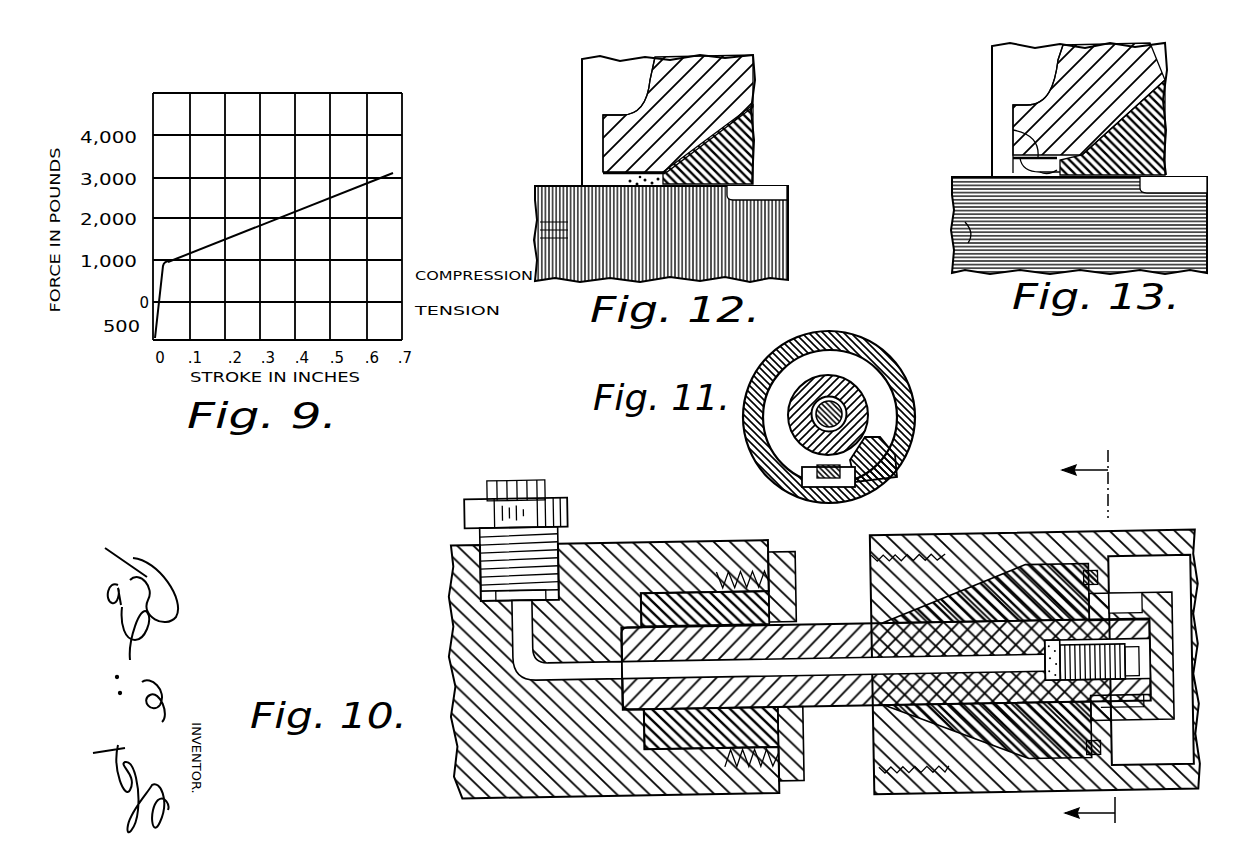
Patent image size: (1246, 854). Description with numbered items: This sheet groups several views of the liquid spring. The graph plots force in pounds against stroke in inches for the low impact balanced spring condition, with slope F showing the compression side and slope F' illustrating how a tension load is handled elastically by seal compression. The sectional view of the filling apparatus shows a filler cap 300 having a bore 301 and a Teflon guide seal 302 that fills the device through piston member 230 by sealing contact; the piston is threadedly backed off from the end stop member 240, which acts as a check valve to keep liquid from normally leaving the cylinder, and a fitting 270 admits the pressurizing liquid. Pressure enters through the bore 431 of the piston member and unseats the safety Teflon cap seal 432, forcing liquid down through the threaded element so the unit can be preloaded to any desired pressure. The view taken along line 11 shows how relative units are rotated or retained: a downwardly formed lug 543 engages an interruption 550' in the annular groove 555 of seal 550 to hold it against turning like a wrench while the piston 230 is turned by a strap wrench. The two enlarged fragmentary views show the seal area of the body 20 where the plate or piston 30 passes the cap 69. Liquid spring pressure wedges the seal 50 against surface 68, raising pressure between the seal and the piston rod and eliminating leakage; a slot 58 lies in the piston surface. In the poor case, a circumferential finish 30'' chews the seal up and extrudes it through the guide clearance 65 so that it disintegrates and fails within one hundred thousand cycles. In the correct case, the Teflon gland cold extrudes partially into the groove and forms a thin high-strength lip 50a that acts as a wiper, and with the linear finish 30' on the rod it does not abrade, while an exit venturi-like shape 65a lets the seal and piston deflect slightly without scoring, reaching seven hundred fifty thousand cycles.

In FIG. 10, the section line 11 is at (1118, 636).
In FIG. 12, the vehicle body / frame portion 20 is at (787, 63).
In FIG. 13, the vehicle body / frame portion 20 is at (1213, 37).
In FIG. 12, the piston 30 is at (677, 212).
In FIG. 13, the piston 30 is at (1092, 202).
In FIG. 13, the linear finish 30' is at (935, 229).
In FIG. 12, the circumferential finish 30'' is at (521, 227).
In FIG. 12, the seal 50 is at (760, 137).
In FIG. 13, the seal 50 is at (1172, 120).
In FIG. 13, the lip 50a is at (1037, 157).
In FIG. 12, the slot in plate 58 is at (787, 195).
In FIG. 13, the slot in plate 58 is at (1200, 188).
In FIG. 12, the guide clearance 65 is at (613, 182).
In FIG. 13, the guide clearance 65 is at (1057, 170).
In FIG. 13, the exit venturi-like shape 65a is at (1013, 130).
In FIG. 12, the surface 68 is at (712, 118).
In FIG. 13, the surface 68 is at (1123, 117).
In FIG. 12, the cap 69 is at (657, 78).
In FIG. 13, the cap 69 is at (1077, 77).
In FIG. 11, the piston member 230 is at (857, 398).
In FIG. 10, the piston member 230 is at (858, 624).
In FIG. 11, the end stop member 240 is at (825, 415).
In FIG. 10, the end stop member 240 is at (1147, 657).
In FIG. 10, the hydraulic fitting 270 is at (507, 480).
In FIG. 10, the filler cap 300 is at (463, 549).
In FIG. 10, the bore 301 is at (655, 590).
In FIG. 10, the Teflon guide seal 302 is at (652, 748).
In FIG. 10, the bore 431 is at (850, 672).
In FIG. 10, the safety Teflon cap seal 432 is at (1035, 585).
In FIG. 11, the lug 543 is at (813, 495).
In FIG. 10, the lug 543 is at (1170, 722).
In FIG. 11, the seal 550 is at (836, 403).
In FIG. 10, the seal 550 is at (1035, 639).
In FIG. 11, the interruption 550' is at (918, 449).
In FIG. 11, the annular groove 555 is at (877, 378).
In FIG. 10, the annular groove 555 is at (1105, 595).
In FIG. 9, the slope F is at (280, 239).
In FIG. 9, the slope F' is at (187, 301).